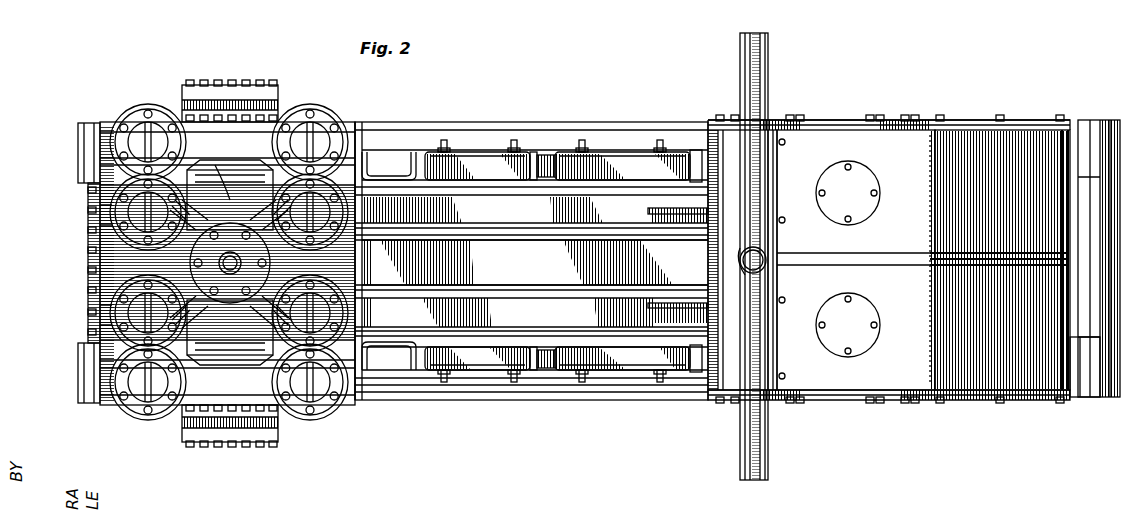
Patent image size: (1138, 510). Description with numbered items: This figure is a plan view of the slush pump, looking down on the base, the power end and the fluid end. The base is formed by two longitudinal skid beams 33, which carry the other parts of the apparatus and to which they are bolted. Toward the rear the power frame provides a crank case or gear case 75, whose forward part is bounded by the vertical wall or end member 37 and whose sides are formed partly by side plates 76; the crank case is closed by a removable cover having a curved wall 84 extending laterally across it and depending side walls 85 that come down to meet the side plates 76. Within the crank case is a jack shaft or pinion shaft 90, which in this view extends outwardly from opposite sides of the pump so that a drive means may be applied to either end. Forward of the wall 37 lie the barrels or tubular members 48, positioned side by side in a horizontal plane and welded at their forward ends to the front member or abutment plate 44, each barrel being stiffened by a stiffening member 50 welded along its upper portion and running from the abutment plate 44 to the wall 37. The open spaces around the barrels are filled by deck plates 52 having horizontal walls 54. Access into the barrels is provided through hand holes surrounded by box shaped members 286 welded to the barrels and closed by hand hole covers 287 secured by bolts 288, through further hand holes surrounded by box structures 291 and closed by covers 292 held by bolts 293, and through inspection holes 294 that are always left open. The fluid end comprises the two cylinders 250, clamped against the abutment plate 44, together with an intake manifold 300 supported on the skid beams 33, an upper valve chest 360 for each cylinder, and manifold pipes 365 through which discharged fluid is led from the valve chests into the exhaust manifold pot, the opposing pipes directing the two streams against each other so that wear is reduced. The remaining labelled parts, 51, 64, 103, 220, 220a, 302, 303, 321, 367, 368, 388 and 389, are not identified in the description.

The longitudinal skid beams 33 is at (428, 132).
The vertical wall or end member 37 is at (700, 255).
The front member or abutment plate 44 is at (360, 395).
The barrels or tubular members 48 is at (546, 152).
The stiffening member 50 is at (494, 312).
The frame bed 51 is at (549, 275).
The filler or deck plates 52 is at (514, 130).
The horizontal walls 54 is at (612, 152).
The column 64 is at (733, 139).
The crank case or gear case 75 is at (1025, 135).
The side plates 76 is at (812, 130).
The curved wall 84 is at (1020, 380).
The depending side walls 85 is at (975, 130).
The jack shaft or pinion shaft 90 is at (760, 46).
The bolt strip 103 is at (915, 120).
The lever 220 is at (750, 272).
The knob 220a is at (755, 255).
The cylinders 250 is at (252, 180).
The box shaped members 286 is at (575, 155).
The hand hole covers 287 is at (632, 150).
The bolts 288 is at (695, 150).
The box structures 291 is at (483, 150).
The covers 292 is at (470, 150).
The bolts 293 is at (534, 152).
The inspection holes 294 is at (378, 152).
The intake manifold 300 is at (195, 140).
The flange 302 is at (280, 110).
The bolt block 303 is at (218, 98).
The flange 321 is at (124, 110).
The upper valve chest 360 is at (100, 155).
The manifold pipe 365 is at (208, 228).
The link 367 is at (213, 165).
The hub 368 is at (240, 246).
The bolt 388 is at (90, 195).
The nut 389 is at (90, 223).